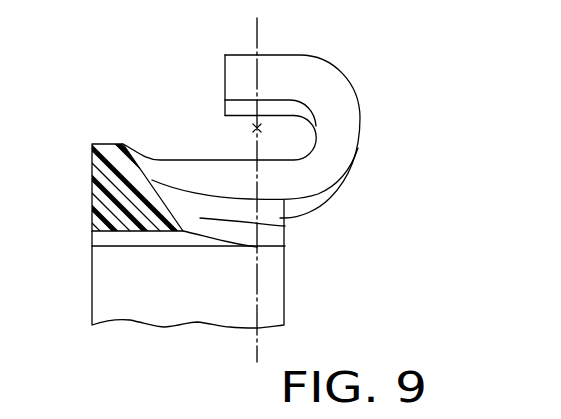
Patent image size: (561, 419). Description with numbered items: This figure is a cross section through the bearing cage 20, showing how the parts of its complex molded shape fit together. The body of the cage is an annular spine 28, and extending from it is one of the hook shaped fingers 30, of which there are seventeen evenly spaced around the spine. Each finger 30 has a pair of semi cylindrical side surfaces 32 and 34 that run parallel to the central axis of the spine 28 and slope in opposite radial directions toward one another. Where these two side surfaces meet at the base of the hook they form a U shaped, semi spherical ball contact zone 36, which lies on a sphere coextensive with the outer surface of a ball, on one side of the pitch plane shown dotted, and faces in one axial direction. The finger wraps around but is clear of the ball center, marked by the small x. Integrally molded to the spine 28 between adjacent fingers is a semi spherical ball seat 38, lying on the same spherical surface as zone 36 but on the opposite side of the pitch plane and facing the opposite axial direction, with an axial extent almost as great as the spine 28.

The cage 20 is at (289, 290).
The annular spine 28 is at (98, 204).
The hook shaped finger 30 is at (362, 112).
The side surface 32 is at (246, 90).
The side surface 34 is at (228, 177).
The ball contact zone 36 is at (326, 77).
The ball seat 38 is at (285, 226).